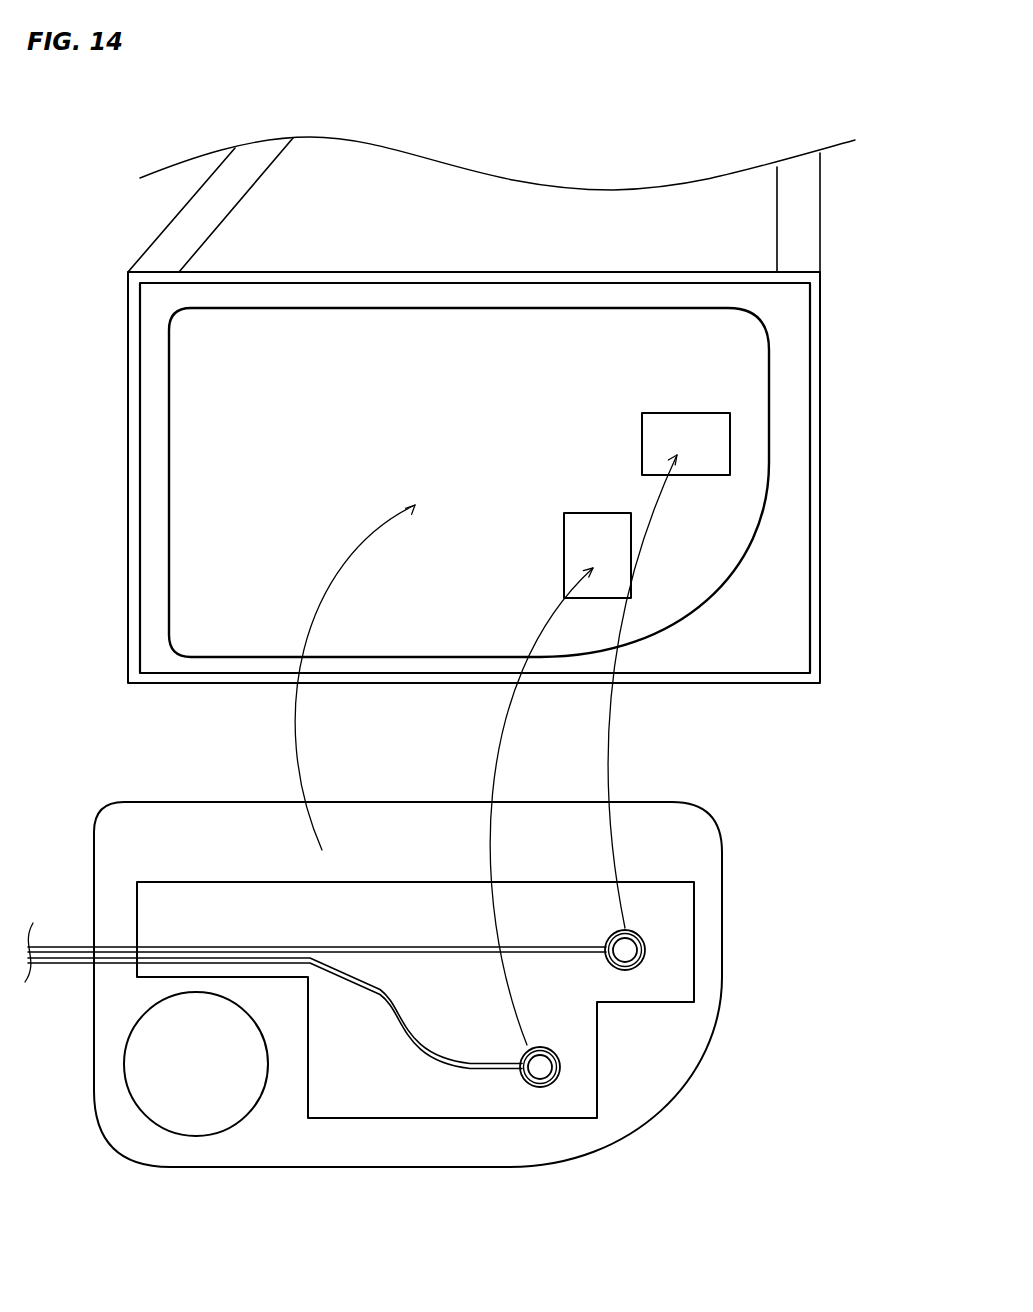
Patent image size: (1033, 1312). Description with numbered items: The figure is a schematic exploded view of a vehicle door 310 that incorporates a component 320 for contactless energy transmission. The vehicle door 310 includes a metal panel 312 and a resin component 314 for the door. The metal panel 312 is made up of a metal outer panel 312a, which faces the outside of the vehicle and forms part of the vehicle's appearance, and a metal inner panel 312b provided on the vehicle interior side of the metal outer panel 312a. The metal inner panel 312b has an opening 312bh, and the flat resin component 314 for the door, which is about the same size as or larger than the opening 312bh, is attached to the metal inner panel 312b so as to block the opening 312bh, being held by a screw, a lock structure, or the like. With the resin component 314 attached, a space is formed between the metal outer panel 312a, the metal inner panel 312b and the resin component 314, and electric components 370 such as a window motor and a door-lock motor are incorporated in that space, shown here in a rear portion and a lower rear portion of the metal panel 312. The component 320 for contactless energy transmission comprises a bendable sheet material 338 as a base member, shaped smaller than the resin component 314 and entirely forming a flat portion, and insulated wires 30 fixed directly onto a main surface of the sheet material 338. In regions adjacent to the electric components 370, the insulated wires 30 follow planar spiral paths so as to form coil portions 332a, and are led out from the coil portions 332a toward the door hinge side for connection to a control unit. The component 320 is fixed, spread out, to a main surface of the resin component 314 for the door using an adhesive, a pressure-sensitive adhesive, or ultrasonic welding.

The vehicle door 310 is at (501, 466).
The metal panel 312 is at (484, 534).
The metal outer panel 312a is at (795, 685).
The metal inner panel 312b is at (475, 516).
The opening 312bh is at (742, 548).
The resin component for the door 314 is at (640, 800).
The component for contactless energy transmission 320 is at (373, 955).
The insulated wire 30 is at (377, 947).
The coil portion 332a is at (607, 935).
The sheet material 338 is at (389, 882).
The electric components 370 is at (683, 412).